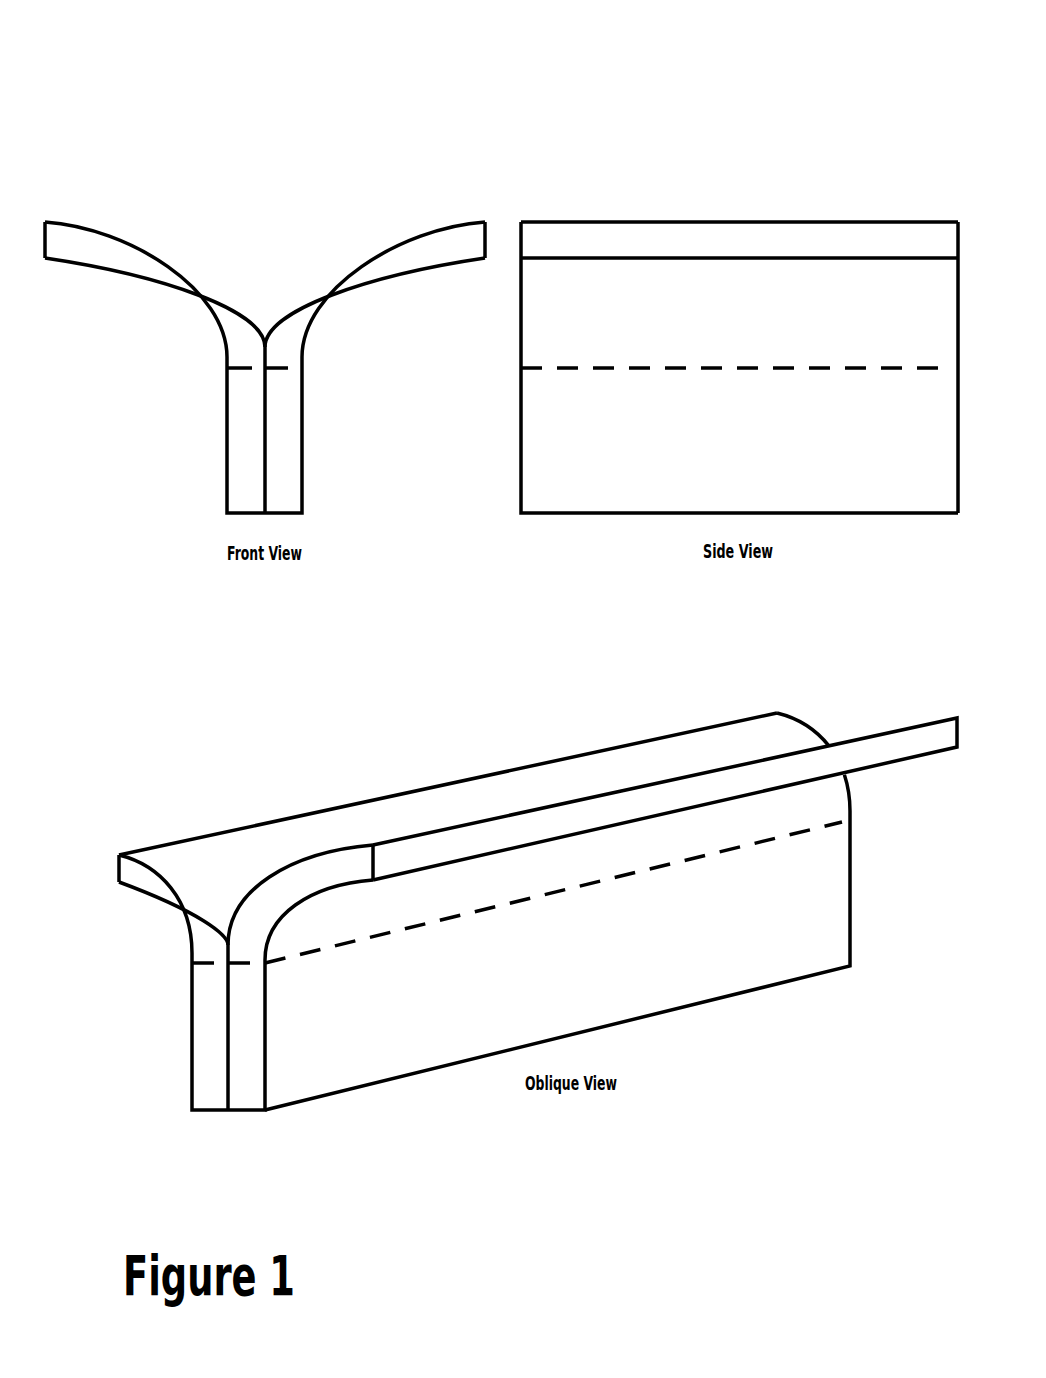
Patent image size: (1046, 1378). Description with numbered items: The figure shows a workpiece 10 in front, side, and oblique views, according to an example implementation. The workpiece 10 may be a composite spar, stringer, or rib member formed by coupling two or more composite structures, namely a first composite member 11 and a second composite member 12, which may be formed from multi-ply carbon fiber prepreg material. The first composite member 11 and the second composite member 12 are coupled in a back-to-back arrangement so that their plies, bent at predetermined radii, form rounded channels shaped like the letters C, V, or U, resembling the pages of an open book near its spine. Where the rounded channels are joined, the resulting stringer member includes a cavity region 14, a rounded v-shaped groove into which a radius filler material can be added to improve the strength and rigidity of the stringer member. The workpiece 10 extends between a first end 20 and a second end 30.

The workpiece 10 is at (834, 90).
The first composite member 11 is at (138, 232).
The second composite member 12 is at (440, 222).
The cavity region 14 is at (267, 278).
The first end 20 is at (520, 514).
The second end 30 is at (957, 514).